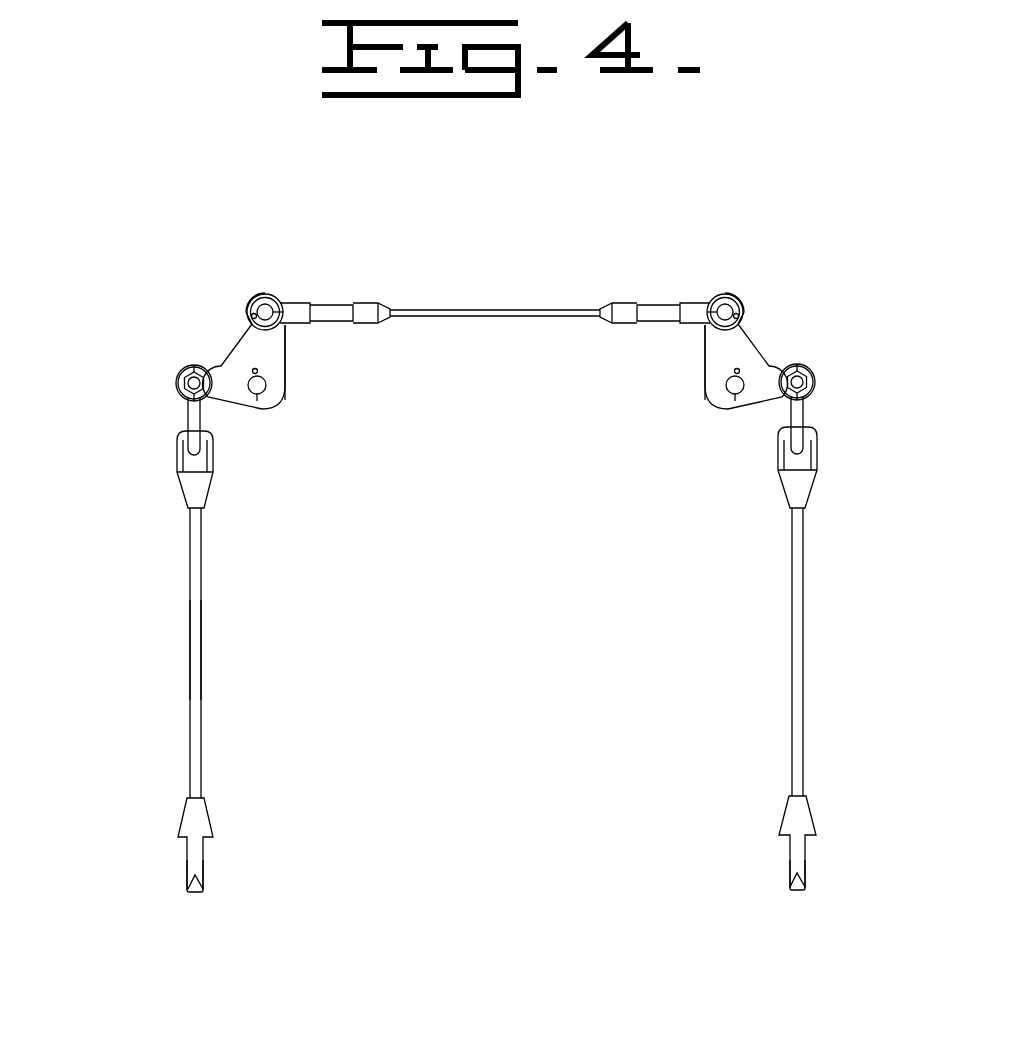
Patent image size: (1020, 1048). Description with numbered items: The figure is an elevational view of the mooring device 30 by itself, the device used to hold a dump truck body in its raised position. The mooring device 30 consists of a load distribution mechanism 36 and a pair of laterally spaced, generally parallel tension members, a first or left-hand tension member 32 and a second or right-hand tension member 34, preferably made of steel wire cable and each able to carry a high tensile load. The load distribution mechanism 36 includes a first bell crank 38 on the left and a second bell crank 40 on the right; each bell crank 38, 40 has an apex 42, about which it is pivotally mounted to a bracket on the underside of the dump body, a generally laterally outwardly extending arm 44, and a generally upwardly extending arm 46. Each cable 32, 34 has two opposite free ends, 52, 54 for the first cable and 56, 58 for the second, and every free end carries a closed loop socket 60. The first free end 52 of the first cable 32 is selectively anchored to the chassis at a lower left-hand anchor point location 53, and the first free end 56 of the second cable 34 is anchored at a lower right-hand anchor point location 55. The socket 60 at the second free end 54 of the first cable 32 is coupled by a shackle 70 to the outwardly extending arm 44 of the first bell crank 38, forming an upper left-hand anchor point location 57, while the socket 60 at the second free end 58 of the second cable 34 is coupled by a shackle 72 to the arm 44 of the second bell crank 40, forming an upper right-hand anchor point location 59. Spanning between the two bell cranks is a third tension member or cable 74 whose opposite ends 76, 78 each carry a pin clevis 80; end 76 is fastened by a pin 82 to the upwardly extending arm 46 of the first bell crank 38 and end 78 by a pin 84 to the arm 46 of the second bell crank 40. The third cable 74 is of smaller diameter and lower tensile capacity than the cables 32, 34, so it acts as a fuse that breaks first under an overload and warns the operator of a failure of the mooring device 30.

The mooring device 30 is at (155, 658).
The first tension member 32 is at (197, 660).
The second tension member 34 is at (797, 638).
The load distribution mechanism 36 is at (601, 208).
The first bell crank 38 is at (303, 380).
The second bell crank 40 is at (669, 381).
The apex 42 is at (268, 400).
The laterally outwardly extending arm 44 is at (220, 367).
The upwardly extending arm 46 is at (277, 347).
The first free end 52 is at (197, 857).
The lower left-hand anchor point location 53 is at (160, 886).
The second free end 54 is at (187, 477).
The lower right-hand anchor point location 55 is at (833, 881).
The first free end 56 is at (807, 848).
The upper left-hand anchor point location 57 is at (149, 392).
The second free end 58 is at (803, 493).
The upper right-hand anchor point location 59 is at (838, 367).
The closed loop socket 60 is at (210, 453).
The shackle 70 is at (193, 410).
The shackle 72 is at (798, 417).
The third tension member 74 is at (493, 308).
The end of third cable 76 is at (337, 302).
The end of third cable 78 is at (658, 303).
The pin clevis 80 is at (295, 300).
The pin 82 is at (250, 302).
The pin 84 is at (743, 327).